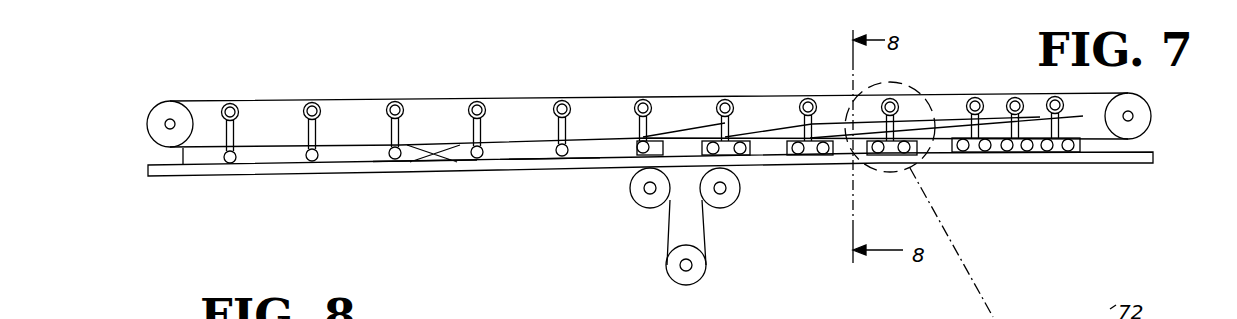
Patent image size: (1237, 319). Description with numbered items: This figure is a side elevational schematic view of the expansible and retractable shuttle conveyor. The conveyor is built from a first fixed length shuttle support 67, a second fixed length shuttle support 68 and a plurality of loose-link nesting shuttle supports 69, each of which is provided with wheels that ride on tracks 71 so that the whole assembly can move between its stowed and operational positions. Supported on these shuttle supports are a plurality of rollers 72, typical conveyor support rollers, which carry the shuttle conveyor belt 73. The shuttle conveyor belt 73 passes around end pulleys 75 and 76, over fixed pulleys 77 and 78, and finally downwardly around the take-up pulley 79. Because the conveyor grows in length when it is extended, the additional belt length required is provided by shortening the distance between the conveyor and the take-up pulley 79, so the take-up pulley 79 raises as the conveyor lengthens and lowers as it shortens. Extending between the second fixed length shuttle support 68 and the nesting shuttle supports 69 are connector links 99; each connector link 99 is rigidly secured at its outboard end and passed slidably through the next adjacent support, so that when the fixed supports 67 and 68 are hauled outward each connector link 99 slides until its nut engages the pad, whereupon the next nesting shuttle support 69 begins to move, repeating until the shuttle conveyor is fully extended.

The first fixed length shuttle support 67 is at (372, 157).
The second fixed length shuttle support 68 is at (538, 155).
The loose-link nesting shuttle supports 69 is at (857, 148).
The tracks 71 is at (312, 170).
The rollers 72 is at (648, 100).
The shuttle conveyor belt 73 is at (207, 83).
The end pulley 75 is at (157, 117).
The end pulley 76 is at (1150, 112).
The fixed pulley 77 is at (650, 208).
The fixed pulley 78 is at (720, 208).
The take-up pulley 79 is at (686, 285).
The connector links 99 is at (830, 138).